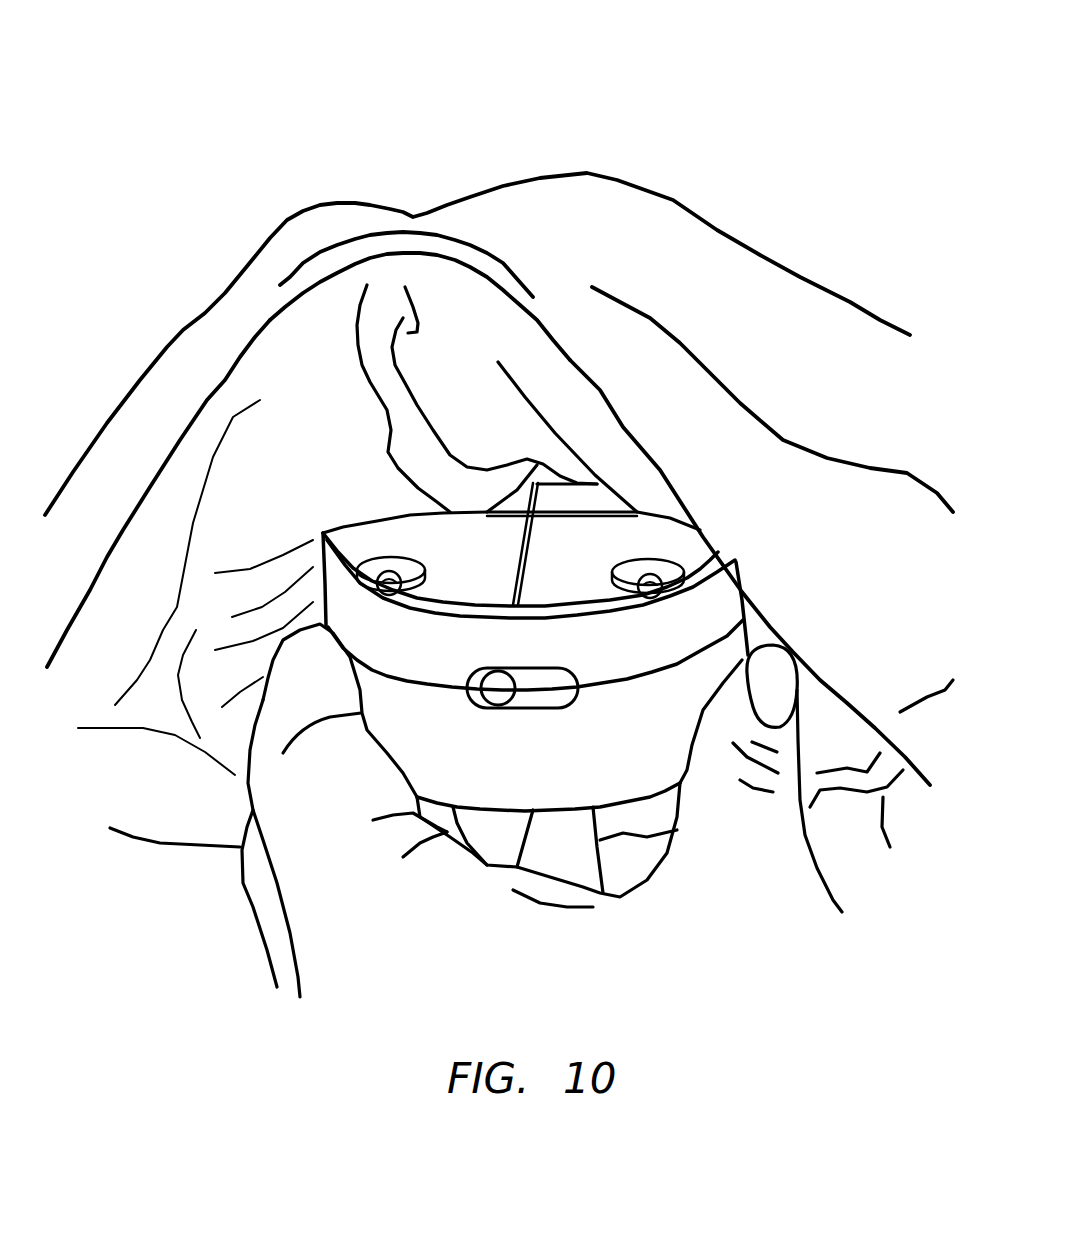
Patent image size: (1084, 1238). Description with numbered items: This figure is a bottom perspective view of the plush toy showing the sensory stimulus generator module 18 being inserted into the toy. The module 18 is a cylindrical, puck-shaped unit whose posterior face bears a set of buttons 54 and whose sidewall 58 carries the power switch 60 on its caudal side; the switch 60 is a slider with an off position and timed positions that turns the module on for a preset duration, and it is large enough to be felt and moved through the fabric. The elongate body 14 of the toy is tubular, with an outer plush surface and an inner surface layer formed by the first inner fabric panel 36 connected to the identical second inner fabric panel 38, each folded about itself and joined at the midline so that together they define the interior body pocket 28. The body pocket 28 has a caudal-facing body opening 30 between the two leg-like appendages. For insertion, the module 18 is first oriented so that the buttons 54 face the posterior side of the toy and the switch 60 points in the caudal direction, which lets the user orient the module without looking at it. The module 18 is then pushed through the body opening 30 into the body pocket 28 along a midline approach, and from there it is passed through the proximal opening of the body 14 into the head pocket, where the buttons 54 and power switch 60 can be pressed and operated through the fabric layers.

The elongate body 14 is at (588, 173).
The sensory stimulus generator module 18 is at (638, 720).
The body pocket 28 is at (450, 283).
The body opening 30 is at (299, 297).
The first inner fabric panel 36 is at (283, 420).
The second inner fabric panel 38 is at (565, 372).
The buttons 54 is at (472, 570).
The sidewall 58 is at (575, 762).
The power switch 60 is at (500, 690).